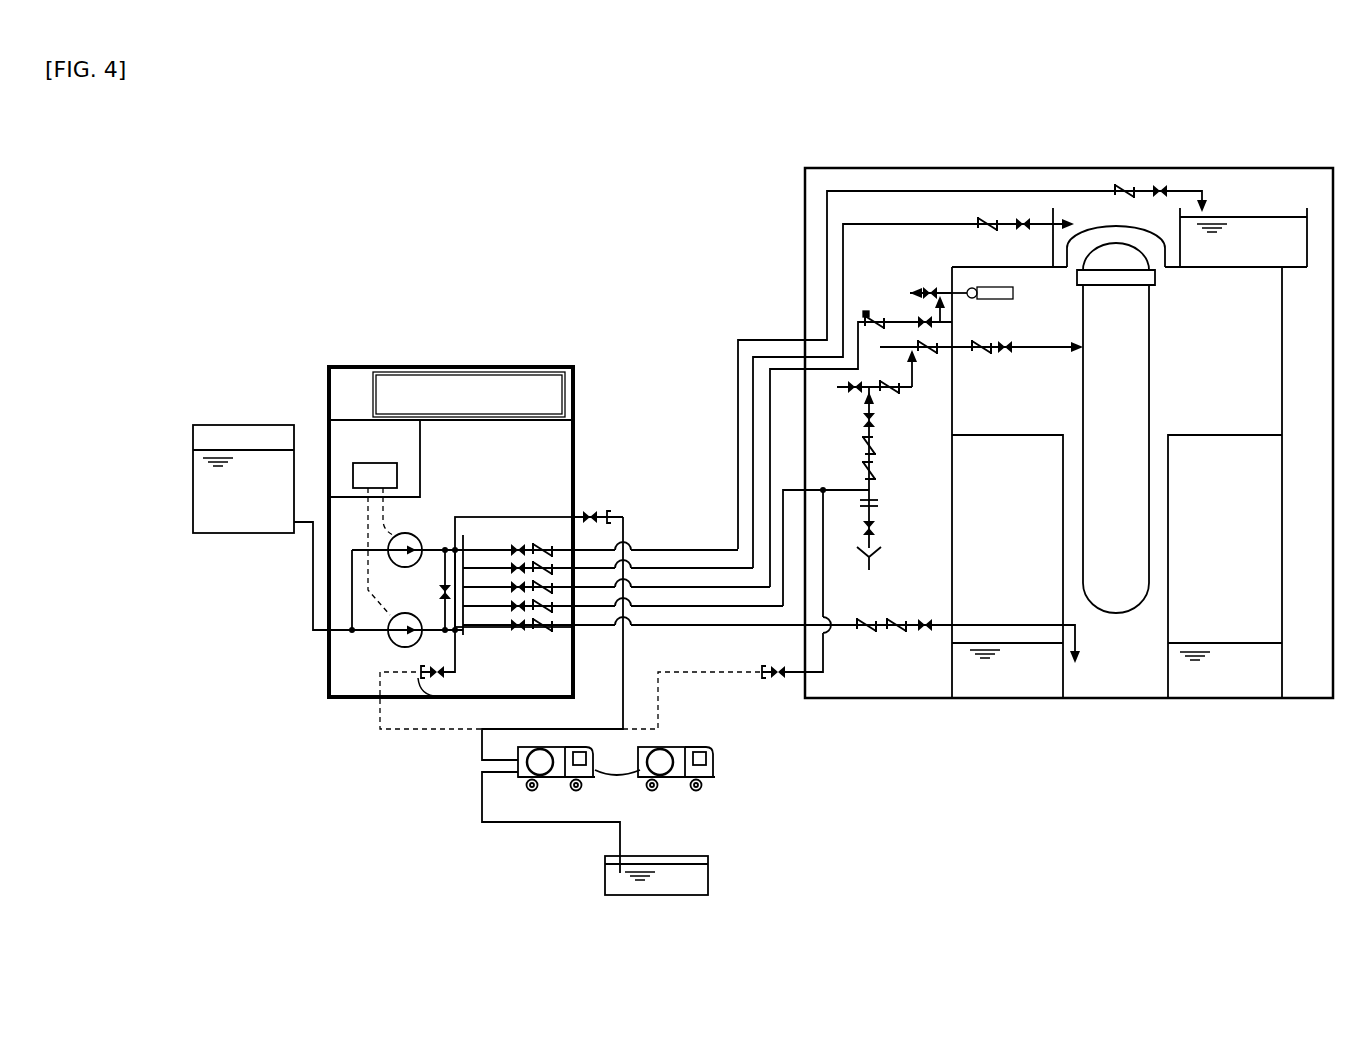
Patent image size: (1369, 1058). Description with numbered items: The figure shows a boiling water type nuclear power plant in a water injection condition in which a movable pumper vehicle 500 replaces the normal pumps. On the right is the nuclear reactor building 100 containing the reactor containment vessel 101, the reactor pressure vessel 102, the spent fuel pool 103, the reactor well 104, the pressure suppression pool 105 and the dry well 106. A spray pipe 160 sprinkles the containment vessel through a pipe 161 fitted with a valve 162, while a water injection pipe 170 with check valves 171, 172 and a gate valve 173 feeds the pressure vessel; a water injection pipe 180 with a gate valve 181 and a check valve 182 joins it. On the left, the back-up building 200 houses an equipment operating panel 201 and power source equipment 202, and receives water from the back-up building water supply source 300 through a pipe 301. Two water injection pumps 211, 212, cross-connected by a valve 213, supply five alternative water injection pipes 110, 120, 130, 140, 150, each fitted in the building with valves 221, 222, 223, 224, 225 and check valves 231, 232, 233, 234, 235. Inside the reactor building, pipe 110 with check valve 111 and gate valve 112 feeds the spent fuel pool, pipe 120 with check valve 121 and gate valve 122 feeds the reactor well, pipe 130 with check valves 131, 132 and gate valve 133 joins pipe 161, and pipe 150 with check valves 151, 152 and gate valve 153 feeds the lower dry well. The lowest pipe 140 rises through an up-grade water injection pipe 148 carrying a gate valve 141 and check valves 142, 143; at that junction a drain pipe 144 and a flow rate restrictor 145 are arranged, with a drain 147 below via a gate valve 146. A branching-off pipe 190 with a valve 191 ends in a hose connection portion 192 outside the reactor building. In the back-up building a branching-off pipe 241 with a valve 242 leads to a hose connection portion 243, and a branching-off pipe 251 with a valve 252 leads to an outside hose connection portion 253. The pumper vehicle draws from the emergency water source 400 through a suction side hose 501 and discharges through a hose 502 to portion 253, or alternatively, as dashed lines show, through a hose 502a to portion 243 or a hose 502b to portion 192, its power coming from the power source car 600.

The nuclear reactor building 100 is at (1248, 168).
The reactor containment vessel 101 is at (1284, 343).
The reactor pressure vessel 102 is at (1110, 232).
The spent fuel pool 103 is at (1308, 237).
The reactor well 104 is at (1112, 248).
The pressure suppression pool 105 is at (1225, 683).
The dry well 106 is at (1118, 690).
The alternative water injection pipe 110 is at (650, 548).
The check valve 111 is at (1125, 186).
The gate valve 112 is at (1162, 186).
The alternative water injection pipe 120 is at (688, 568).
The check valve 121 is at (988, 220).
The gate valve 122 is at (1023, 220).
The alternative water injection pipe 130 is at (662, 588).
The check valve 131 is at (873, 316).
The check valve 132 is at (905, 316).
The gate valve 133 is at (943, 318).
The alternative water injection pipe 140 is at (697, 607).
The gate valve 141 is at (876, 422).
The check valve 142 is at (876, 446).
The check valve 143 is at (876, 471).
The drain pipe 144 is at (858, 501).
The flow rate restrictor 145 is at (878, 506).
The gate valve 146 is at (876, 530).
The drain 147 is at (876, 562).
The up-grade water injection pipe 148 is at (863, 488).
The alternative water injection pipe 150 is at (738, 627).
The check valve 151 is at (864, 630).
The check valve 152 is at (895, 632).
The gate valve 153 is at (925, 632).
The spray pipe 160 is at (995, 299).
The pipe 161 is at (940, 300).
The valve 162 is at (917, 292).
The water injection pipe 170 is at (1048, 348).
The check valve 171 is at (922, 352).
The check valve 172 is at (985, 352).
The gate valve 173 is at (1010, 352).
The water injection pipe 180 is at (913, 388).
The gate valve 181 is at (857, 392).
The check valve 182 is at (893, 381).
The branching-off pipe 190 is at (826, 570).
The valve 191 is at (780, 678).
The hose connection portion 192 is at (762, 680).
The back-up building 200 is at (576, 388).
The equipment operating panel 201 is at (452, 367).
The power source equipment 202 is at (378, 462).
The water injection pump 211 is at (425, 512).
The water injection pump 212 is at (392, 640).
The valve 213 is at (440, 592).
The valve 221 is at (512, 550).
The valve 222 is at (512, 568).
The valve 223 is at (512, 587).
The valve 224 is at (512, 606).
The valve 225 is at (512, 625).
The check valve 231 is at (555, 554).
The check valve 232 is at (555, 572).
The check valve 233 is at (555, 591).
The check valve 234 is at (555, 610).
The check valve 235 is at (555, 629).
The branching-off pipe 241 is at (457, 660).
The valve 242 is at (438, 680).
The hose connection portion 243 is at (442, 696).
The branching-off pipe 251 is at (520, 518).
The valve 252 is at (592, 511).
The hose connection portion 253 is at (612, 513).
The back-up building water supply source 300 is at (240, 424).
The pipe 301 is at (313, 603).
The emergency water source 400 is at (605, 878).
The movable pumper vehicle 500 is at (548, 780).
The suction side hose 501 is at (481, 799).
The discharge side hose 502 is at (588, 729).
The hose 502a is at (406, 731).
The hose 502b is at (660, 702).
The movable power source car 600 is at (668, 780).